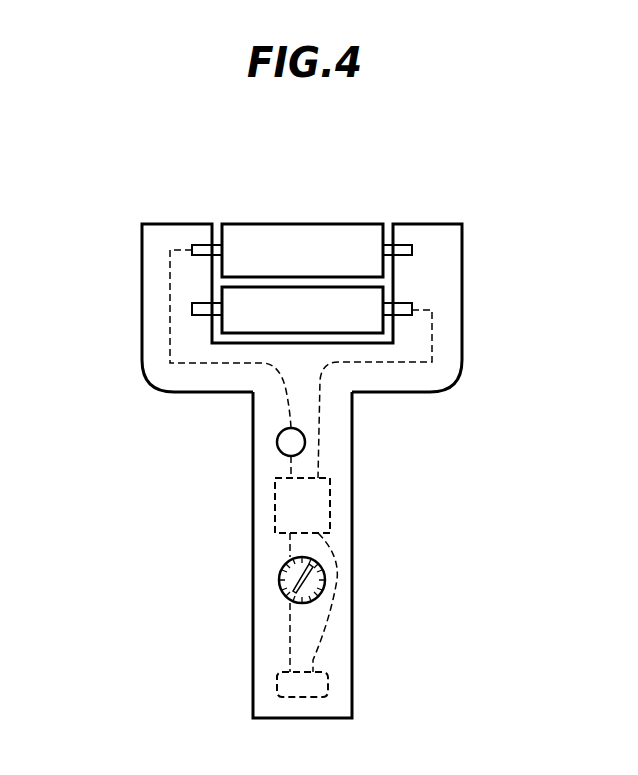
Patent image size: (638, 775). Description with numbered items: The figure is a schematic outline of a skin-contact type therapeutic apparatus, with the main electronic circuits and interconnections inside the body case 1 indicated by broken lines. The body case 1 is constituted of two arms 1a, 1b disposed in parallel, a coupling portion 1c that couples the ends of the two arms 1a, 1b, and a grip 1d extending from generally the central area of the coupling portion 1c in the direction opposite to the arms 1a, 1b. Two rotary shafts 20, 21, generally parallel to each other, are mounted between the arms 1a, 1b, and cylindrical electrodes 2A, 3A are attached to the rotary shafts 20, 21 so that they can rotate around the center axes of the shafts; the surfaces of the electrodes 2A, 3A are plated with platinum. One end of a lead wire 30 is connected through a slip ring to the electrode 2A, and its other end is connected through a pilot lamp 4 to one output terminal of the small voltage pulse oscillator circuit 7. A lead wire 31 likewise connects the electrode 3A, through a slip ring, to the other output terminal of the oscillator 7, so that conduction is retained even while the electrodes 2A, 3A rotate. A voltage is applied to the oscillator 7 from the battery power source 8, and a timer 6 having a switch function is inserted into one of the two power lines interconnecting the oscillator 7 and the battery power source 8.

The body case 1 is at (301, 471).
The arm 1a is at (464, 297).
The arm 1b is at (140, 265).
The coupling portion 1c is at (382, 394).
The grip 1d is at (354, 588).
The rotary shaft 20 is at (197, 250).
The rotary shaft 21 is at (193, 310).
The cylindrical electrode 2A is at (365, 267).
The cylindrical electrode 3A is at (243, 323).
The lead wire 30 is at (170, 297).
The lead wire 31 is at (433, 343).
The pilot lamp 4 is at (285, 446).
The timer 6 is at (285, 585).
The small voltage pulse oscillator circuit 7 is at (282, 512).
The battery power source 8 is at (284, 690).